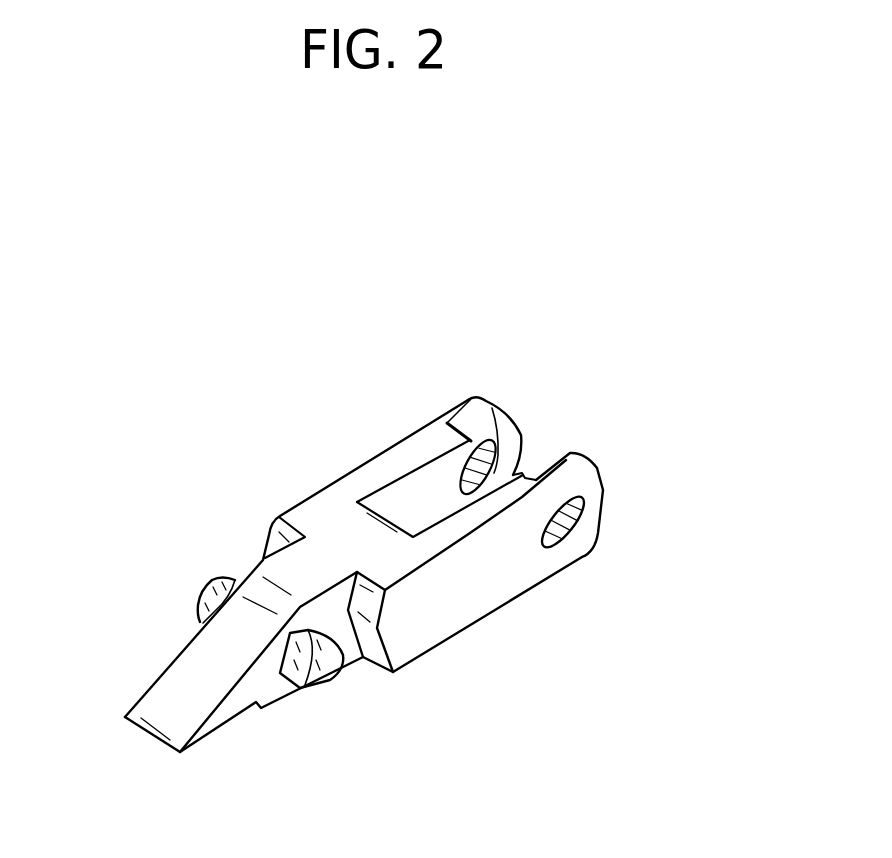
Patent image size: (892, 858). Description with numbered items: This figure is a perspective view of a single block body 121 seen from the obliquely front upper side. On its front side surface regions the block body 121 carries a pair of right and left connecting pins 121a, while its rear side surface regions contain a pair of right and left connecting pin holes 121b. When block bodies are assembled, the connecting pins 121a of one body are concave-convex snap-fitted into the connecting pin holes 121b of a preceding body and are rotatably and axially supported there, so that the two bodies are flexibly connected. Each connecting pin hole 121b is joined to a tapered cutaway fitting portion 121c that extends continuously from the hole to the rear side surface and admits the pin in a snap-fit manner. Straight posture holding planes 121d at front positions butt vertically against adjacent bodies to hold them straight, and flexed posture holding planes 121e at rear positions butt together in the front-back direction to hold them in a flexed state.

The block body 121 is at (193, 425).
The connecting pin 121a is at (207, 594).
The connecting pin hole 121b is at (520, 440).
The tapered cutaway fitting portion 121c is at (477, 418).
The straight posture holding plane 121d is at (211, 733).
The flexed posture holding plane 121e is at (373, 656).